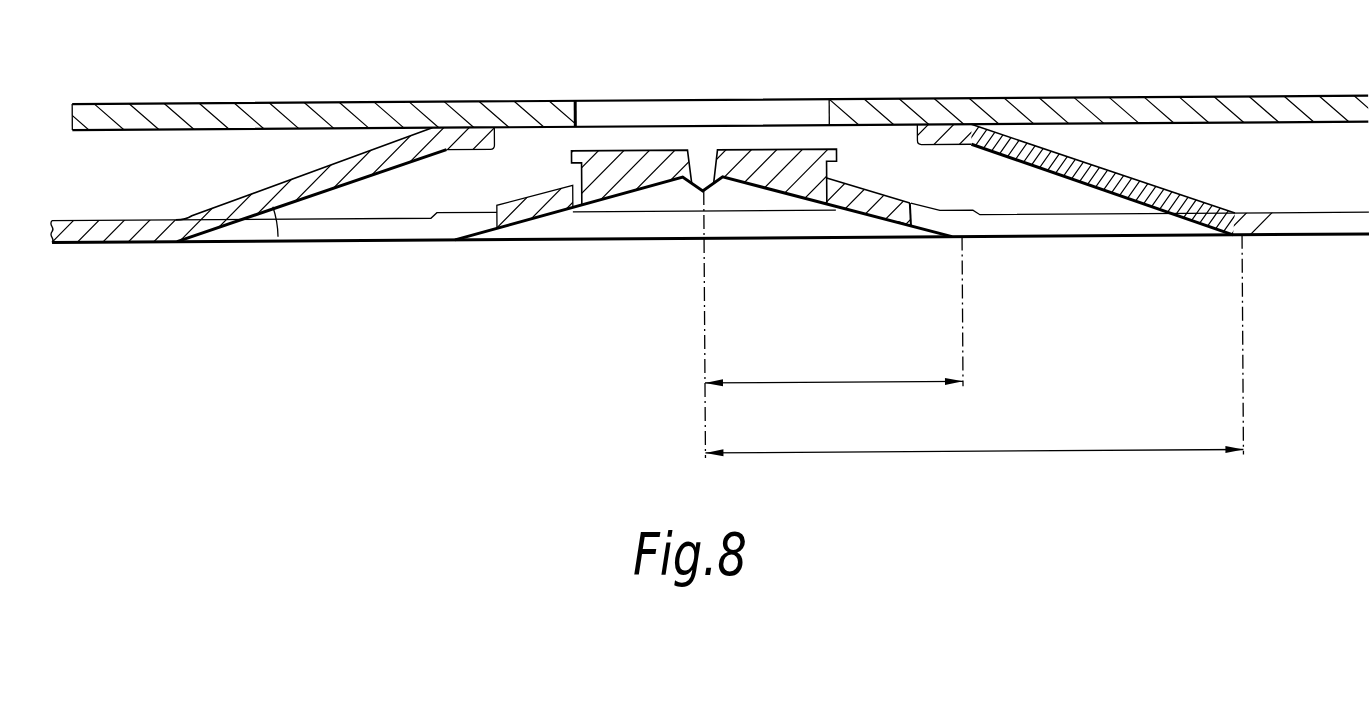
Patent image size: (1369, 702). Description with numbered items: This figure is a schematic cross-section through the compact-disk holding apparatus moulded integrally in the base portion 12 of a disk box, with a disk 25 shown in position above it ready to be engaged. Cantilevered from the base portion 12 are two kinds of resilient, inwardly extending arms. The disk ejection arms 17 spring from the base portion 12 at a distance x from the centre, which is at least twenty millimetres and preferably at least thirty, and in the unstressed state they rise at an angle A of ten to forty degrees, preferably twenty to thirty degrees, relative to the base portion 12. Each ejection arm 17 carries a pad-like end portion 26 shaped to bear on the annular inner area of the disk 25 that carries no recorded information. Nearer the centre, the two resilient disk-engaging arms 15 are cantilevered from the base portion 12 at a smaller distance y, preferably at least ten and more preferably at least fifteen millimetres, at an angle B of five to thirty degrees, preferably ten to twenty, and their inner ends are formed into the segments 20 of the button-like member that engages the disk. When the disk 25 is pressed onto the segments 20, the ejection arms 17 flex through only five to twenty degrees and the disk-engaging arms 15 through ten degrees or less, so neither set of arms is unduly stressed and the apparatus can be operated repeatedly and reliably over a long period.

The base portion 12 is at (1317, 220).
The resilient disk-engaging arm 15 is at (862, 212).
The disk ejection arm 17 is at (387, 160).
The segment 20 is at (637, 149).
The compact disk 25 is at (201, 108).
The pad-like end portion 26 is at (477, 131).
The angle A is at (248, 230).
The angle B is at (898, 223).
The distance x is at (973, 346).
The distance y is at (834, 323).